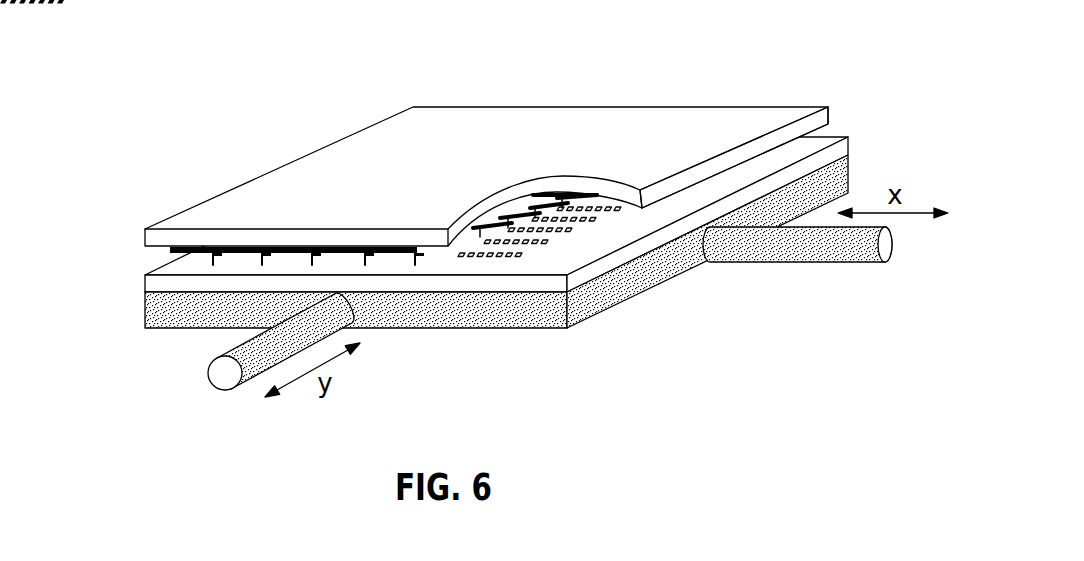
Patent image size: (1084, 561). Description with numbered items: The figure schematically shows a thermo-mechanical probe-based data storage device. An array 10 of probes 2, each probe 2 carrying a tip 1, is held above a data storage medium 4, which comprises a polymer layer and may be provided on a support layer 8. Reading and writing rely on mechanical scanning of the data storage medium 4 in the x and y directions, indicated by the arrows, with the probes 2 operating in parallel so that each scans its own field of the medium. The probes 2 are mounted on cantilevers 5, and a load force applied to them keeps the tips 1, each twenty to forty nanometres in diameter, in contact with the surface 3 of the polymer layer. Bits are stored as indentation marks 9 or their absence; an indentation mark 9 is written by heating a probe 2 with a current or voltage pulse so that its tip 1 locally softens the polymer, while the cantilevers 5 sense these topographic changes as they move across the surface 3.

The tip 1 is at (647, 208).
The probe 2 is at (765, 155).
The surface 3 is at (180, 264).
The data storage medium 4 is at (145, 287).
The cantilever 5 is at (397, 253).
The support layer 8 is at (145, 320).
The indentation mark 9 is at (553, 242).
The array 10 is at (667, 120).